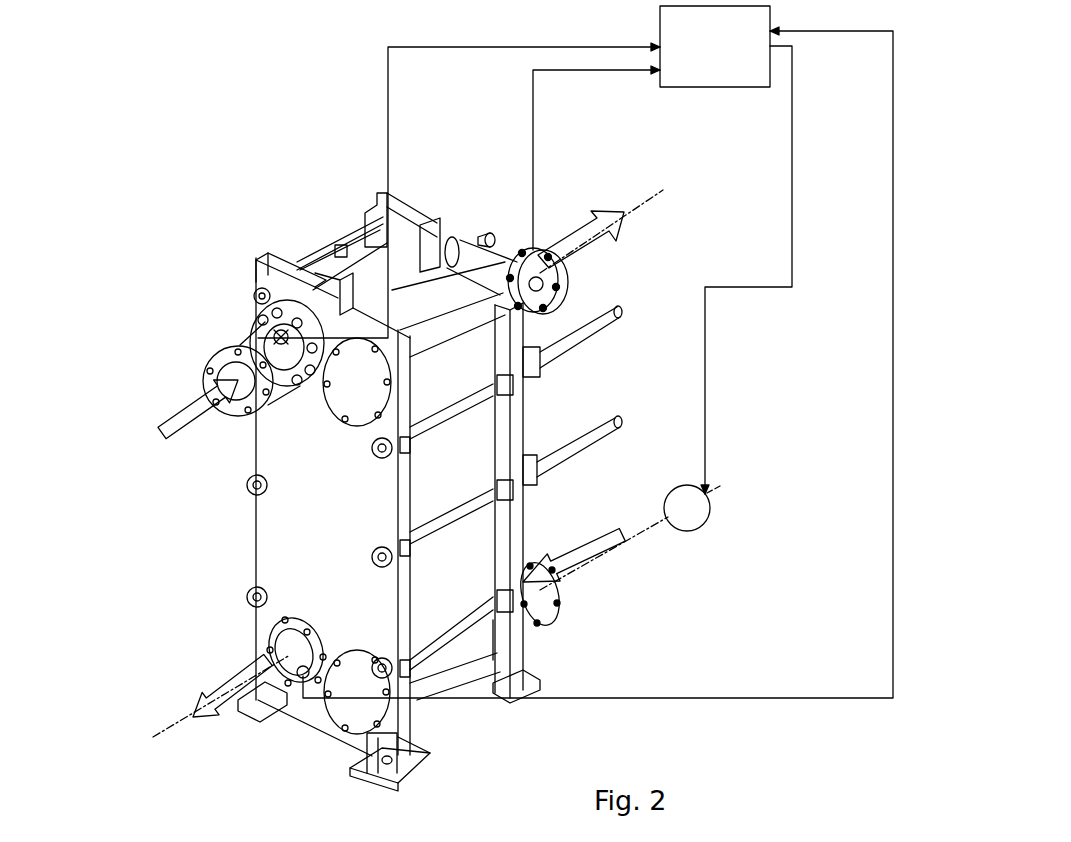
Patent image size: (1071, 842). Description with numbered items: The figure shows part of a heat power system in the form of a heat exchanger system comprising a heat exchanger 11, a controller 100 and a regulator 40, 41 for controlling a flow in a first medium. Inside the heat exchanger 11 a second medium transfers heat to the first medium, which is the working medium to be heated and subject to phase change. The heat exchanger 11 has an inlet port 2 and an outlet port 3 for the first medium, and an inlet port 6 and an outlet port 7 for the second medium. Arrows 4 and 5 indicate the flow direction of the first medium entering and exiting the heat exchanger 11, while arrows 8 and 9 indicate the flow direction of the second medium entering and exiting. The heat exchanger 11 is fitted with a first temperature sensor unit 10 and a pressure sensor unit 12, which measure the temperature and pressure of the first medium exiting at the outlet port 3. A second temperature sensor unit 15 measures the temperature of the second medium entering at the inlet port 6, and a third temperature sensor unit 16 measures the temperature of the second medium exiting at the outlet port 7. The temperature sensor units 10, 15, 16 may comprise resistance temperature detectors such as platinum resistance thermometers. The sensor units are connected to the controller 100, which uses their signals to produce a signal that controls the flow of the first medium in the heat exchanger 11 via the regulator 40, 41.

The inlet port 2 is at (557, 600).
The outlet port 3 is at (535, 250).
The arrow 4 is at (625, 560).
The arrow 5 is at (624, 219).
The inlet port 6 is at (200, 370).
The outlet port 7 is at (263, 640).
The arrow 8 is at (155, 433).
The arrow 9 is at (197, 700).
The first temperature sensor unit 10 is at (620, 303).
The heat exchanger 11 is at (283, 208).
The pressure sensor unit 12 is at (553, 280).
The second temperature sensor unit 15 is at (255, 333).
The third temperature sensor unit 16 is at (303, 678).
The regulator 40 is at (775, 538).
The regulator 41 is at (697, 518).
The controller 100 is at (715, 46).